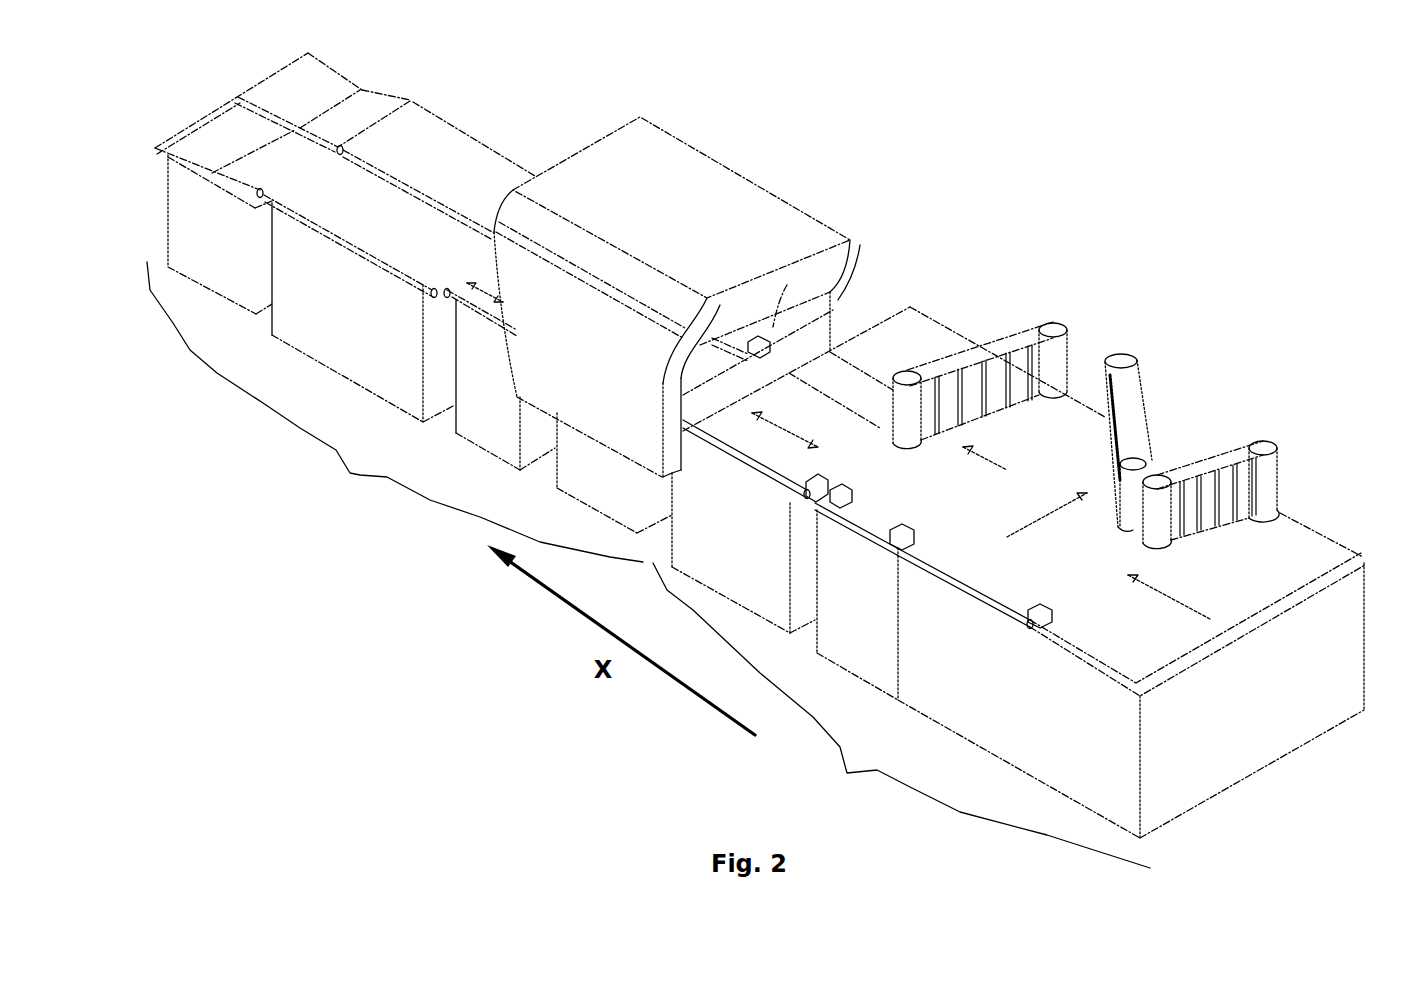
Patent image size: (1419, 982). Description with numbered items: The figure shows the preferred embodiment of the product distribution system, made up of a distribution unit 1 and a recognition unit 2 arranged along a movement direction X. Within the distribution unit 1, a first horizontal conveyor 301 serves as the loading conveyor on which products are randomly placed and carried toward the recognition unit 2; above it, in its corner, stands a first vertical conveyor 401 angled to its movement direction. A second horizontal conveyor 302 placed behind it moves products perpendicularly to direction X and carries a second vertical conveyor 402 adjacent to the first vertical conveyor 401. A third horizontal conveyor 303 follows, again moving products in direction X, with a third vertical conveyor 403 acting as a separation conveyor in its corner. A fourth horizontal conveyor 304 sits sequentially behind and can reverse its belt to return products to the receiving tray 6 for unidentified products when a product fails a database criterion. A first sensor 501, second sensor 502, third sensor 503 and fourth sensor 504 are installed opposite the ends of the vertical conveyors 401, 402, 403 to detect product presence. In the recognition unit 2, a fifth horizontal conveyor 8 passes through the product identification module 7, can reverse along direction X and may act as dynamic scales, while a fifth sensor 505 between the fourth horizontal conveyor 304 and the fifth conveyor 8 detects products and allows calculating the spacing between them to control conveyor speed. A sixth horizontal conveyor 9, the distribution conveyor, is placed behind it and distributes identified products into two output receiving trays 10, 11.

The distribution unit 1 is at (833, 632).
The recognition unit 2 is at (395, 412).
The receiving tray for unidentified products 6 is at (880, 320).
The product identification module 7 is at (725, 250).
The fifth horizontal conveyor (identification module conveyor) 8 is at (707, 358).
The sixth horizontal conveyor (distribution conveyor) 9 is at (500, 322).
The output receiving tray 10 is at (277, 97).
The output receiving tray 11 is at (190, 140).
The first horizontal conveyor 301 is at (1335, 532).
The second horizontal conveyor 302 is at (962, 588).
The third horizontal conveyor 303 is at (855, 524).
The fourth horizontal conveyor 304 is at (755, 462).
The first vertical conveyor 401 is at (1282, 462).
The second vertical conveyor 402 is at (1152, 403).
The third vertical conveyor 403 is at (1000, 332).
The first product position sensor 501 is at (1045, 608).
The second product position sensor 502 is at (905, 532).
The third product position sensor 503 is at (855, 491).
The fourth product position sensor 504 is at (832, 474).
The fifth product position sensor 505 is at (756, 362).